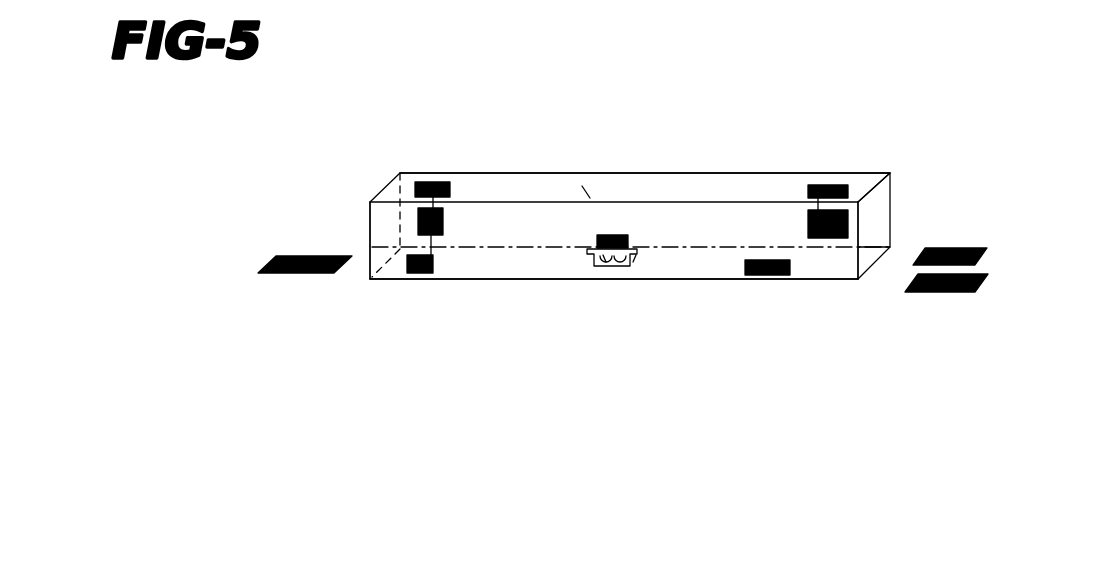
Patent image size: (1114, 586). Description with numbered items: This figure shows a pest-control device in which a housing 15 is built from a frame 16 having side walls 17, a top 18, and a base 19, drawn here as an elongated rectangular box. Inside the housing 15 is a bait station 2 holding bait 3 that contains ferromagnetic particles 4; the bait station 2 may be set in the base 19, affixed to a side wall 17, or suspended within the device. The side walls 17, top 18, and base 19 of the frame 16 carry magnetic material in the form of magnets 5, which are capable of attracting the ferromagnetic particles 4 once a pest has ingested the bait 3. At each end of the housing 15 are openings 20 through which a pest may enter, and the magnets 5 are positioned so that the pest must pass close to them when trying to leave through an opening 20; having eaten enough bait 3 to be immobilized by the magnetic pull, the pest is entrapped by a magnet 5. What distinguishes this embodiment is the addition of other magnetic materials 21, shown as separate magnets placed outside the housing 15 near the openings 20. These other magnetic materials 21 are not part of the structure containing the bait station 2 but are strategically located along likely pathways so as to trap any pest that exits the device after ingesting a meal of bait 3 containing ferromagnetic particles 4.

The bait station 2 is at (612, 268).
The bait 3 is at (603, 255).
The ferromagnetic particles 4 is at (636, 255).
The magnets 5 is at (433, 242).
The housing 15 is at (860, 172).
The frame 16 is at (548, 275).
The side walls 17 is at (732, 228).
The top 18 is at (530, 188).
The base 19 is at (692, 272).
The openings 20 is at (366, 228).
The other magnetic materials 21 is at (290, 287).